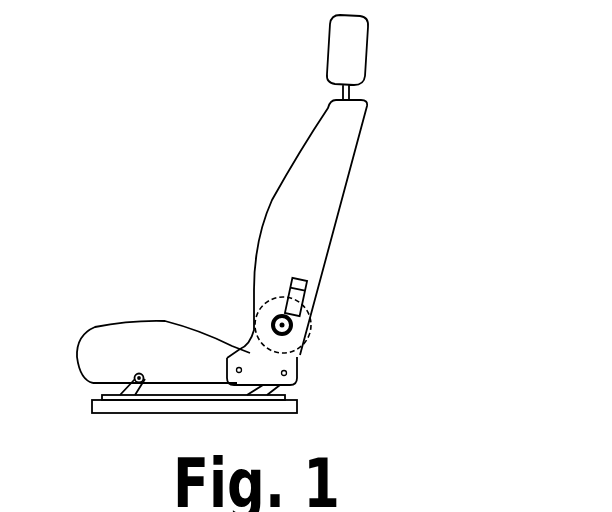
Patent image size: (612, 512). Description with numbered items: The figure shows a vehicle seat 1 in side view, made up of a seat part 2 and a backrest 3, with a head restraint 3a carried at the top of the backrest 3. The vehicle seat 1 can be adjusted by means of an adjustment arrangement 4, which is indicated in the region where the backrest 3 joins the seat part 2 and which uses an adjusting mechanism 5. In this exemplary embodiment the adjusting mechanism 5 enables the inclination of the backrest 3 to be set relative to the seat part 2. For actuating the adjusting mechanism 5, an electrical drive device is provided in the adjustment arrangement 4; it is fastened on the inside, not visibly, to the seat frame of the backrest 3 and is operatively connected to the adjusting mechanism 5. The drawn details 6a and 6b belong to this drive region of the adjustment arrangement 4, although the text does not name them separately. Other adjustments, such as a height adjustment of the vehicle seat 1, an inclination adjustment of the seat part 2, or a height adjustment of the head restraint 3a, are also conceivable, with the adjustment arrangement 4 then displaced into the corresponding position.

The vehicle seat 1 is at (133, 197).
The seat part 2 is at (127, 338).
The backrest 3 is at (300, 187).
The head restraint 3a is at (342, 58).
The adjustment arrangement 4 is at (352, 320).
The adjusting mechanism 5 is at (308, 360).
The release lever 6a is at (303, 295).
The pivot axis 6b is at (292, 332).